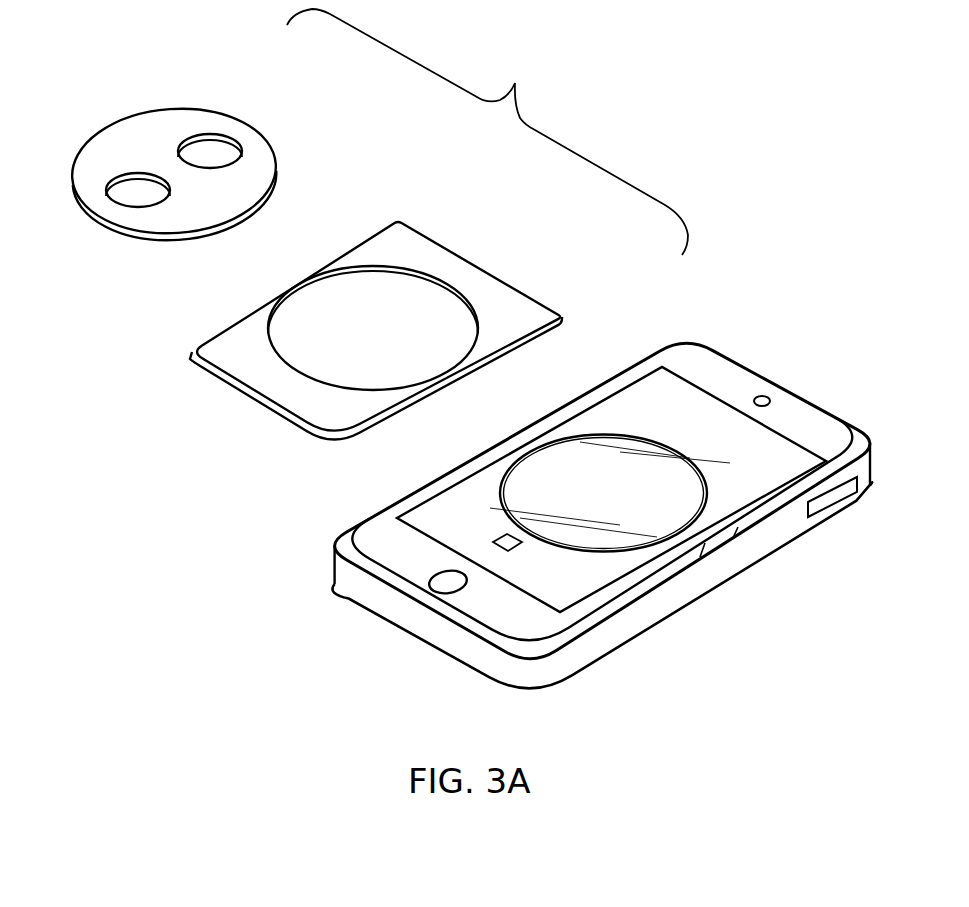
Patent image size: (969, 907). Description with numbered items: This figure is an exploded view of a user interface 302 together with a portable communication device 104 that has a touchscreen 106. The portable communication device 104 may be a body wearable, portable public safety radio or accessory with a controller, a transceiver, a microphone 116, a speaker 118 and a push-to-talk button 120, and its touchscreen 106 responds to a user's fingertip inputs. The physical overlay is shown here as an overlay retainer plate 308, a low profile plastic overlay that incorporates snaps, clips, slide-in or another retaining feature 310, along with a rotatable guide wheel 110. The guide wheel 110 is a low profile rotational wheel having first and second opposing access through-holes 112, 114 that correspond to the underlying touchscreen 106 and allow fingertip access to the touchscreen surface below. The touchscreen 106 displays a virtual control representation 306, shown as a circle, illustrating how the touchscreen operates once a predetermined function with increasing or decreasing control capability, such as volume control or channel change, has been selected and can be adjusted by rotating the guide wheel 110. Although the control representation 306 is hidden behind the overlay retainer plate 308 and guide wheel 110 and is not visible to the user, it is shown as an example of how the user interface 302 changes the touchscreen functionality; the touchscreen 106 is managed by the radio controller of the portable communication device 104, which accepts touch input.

The user interface 302 is at (487, 132).
The rotatable guide wheel 110 is at (266, 150).
The first access through-hole 112 is at (122, 203).
The second access through-hole 114 is at (221, 150).
The overlay retainer plate 308 is at (502, 295).
The retaining feature 310 is at (465, 377).
The portable communication device 104 is at (785, 332).
The touchscreen 106 is at (748, 494).
The virtual control representation 306 is at (623, 550).
The microphone 116 is at (772, 397).
The speaker 118 is at (435, 591).
The push-to-talk button 120 is at (833, 503).